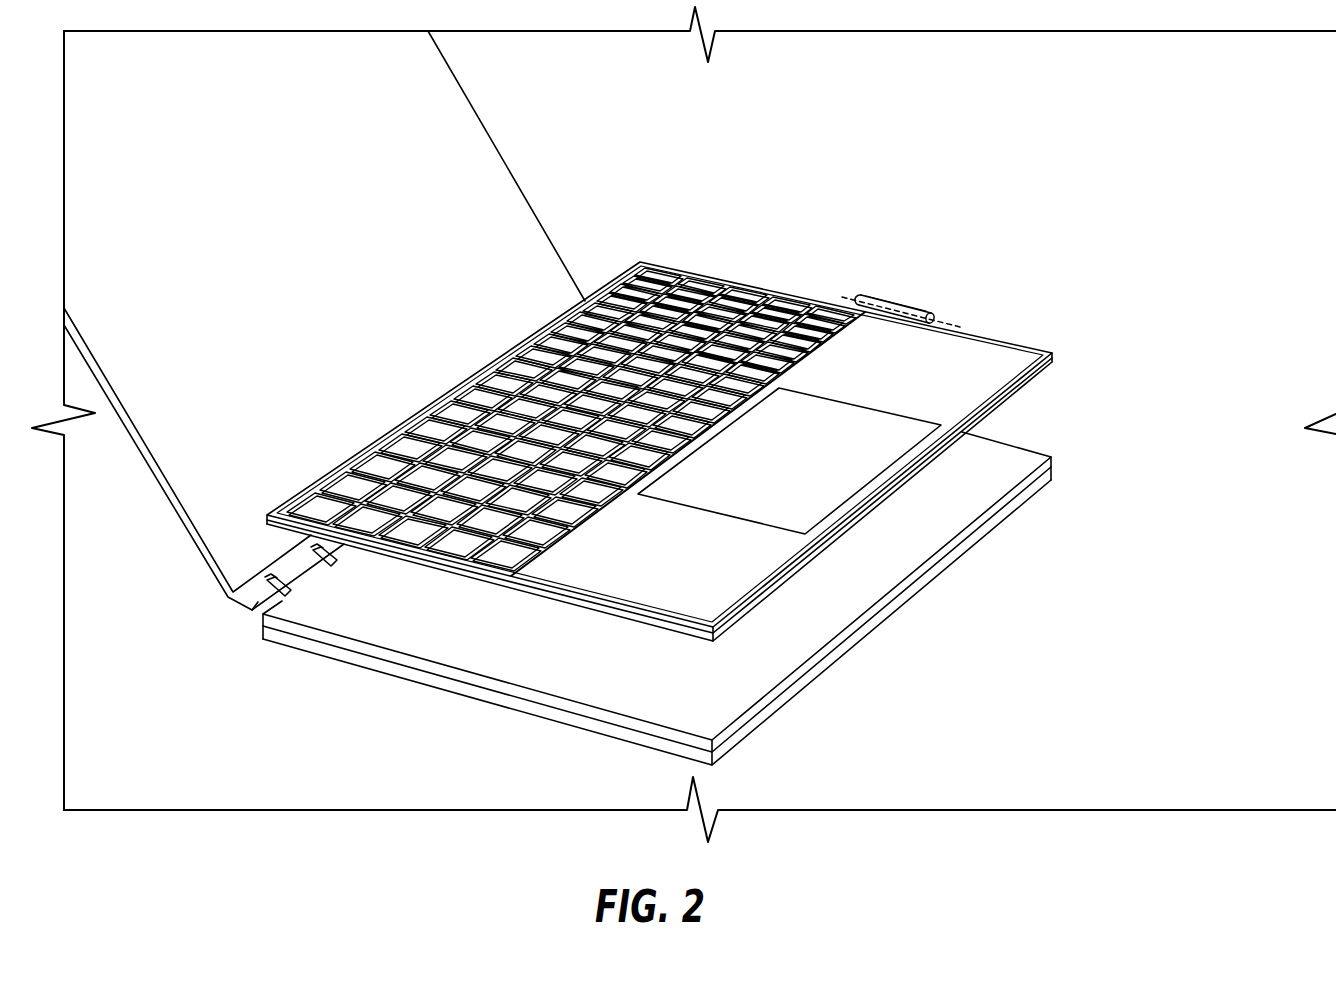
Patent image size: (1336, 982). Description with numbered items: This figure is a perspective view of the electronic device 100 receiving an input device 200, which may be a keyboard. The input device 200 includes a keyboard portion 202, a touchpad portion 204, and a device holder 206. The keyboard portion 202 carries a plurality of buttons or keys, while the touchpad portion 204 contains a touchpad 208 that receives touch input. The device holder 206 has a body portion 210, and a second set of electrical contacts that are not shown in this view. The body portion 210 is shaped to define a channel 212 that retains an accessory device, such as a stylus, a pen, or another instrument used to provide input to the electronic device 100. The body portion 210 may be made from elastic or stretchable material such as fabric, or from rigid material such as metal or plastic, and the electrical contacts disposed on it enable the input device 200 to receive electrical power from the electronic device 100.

The electronic device 100 is at (578, 123).
The input device 200 is at (933, 257).
The keyboard portion 202 is at (760, 273).
The touchpad portion 204 is at (1007, 334).
The device holder 206 is at (898, 291).
The touchpad 208 is at (722, 515).
The body portion 210 is at (910, 303).
The channel 212 is at (943, 318).